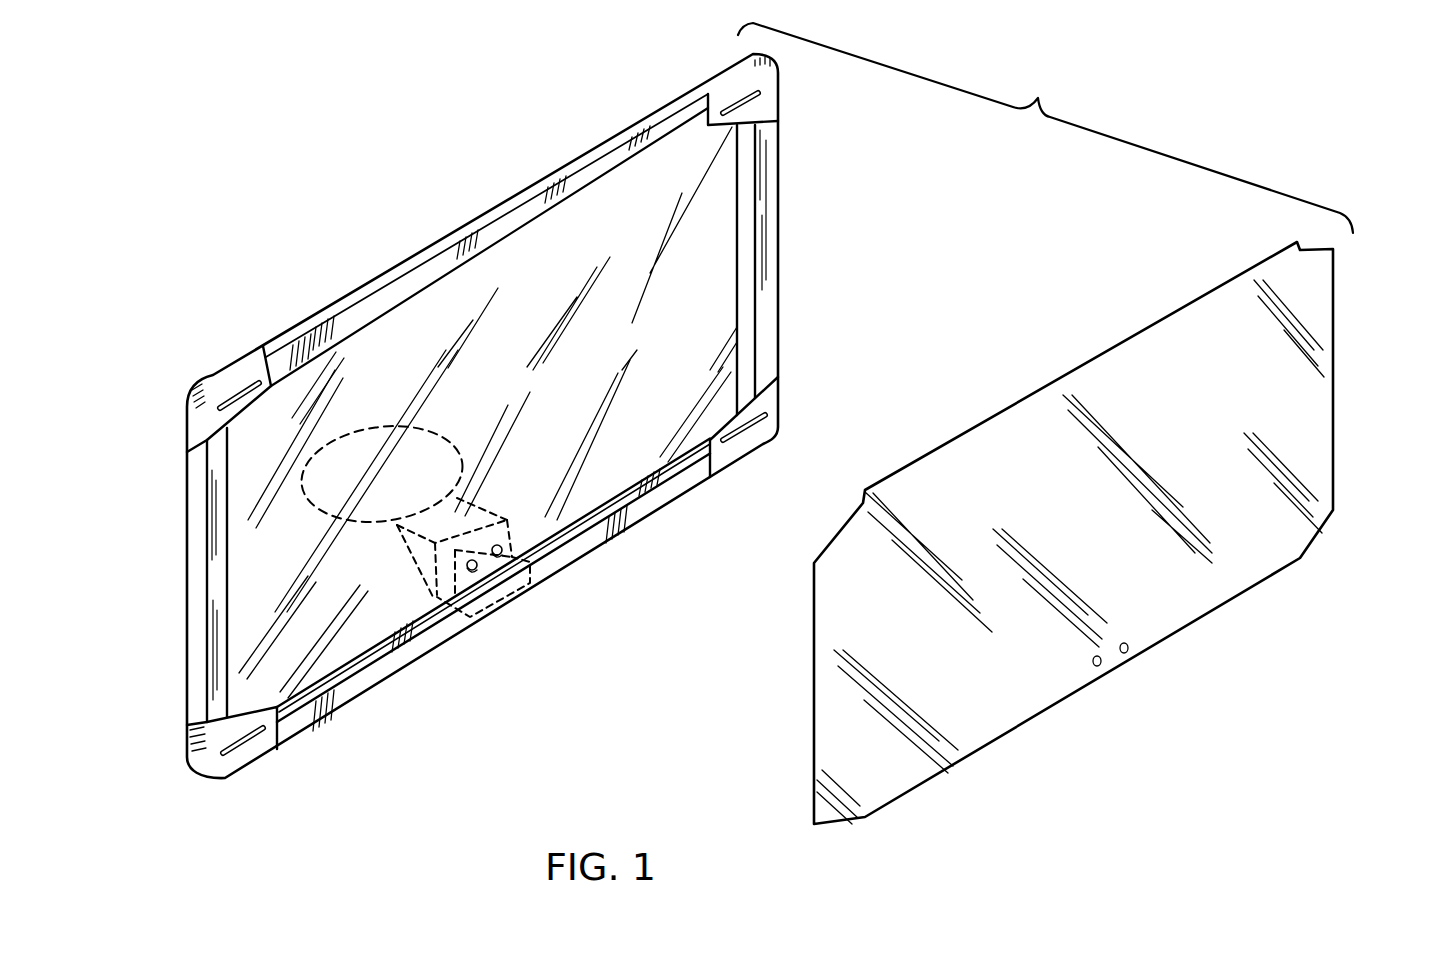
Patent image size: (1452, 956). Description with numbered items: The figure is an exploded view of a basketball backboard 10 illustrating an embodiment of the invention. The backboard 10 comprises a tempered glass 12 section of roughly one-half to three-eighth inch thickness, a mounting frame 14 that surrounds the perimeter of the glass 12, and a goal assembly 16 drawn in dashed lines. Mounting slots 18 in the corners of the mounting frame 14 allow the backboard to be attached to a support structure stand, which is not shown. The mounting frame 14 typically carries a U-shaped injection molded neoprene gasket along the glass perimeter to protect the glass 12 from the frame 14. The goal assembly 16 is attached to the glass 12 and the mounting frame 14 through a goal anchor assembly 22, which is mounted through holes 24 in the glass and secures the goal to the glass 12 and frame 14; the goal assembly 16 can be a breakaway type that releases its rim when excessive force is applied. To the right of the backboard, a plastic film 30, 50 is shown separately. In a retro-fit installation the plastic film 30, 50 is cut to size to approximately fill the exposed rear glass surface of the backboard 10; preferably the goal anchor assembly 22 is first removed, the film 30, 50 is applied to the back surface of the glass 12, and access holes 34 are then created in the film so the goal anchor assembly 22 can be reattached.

The backboard 10 is at (174, 608).
The glass 12 is at (417, 317).
The mounting frame 14 is at (288, 337).
The goal assembly 16 is at (457, 515).
The mounting slots 18 is at (757, 98).
The goal anchor assembly 22 is at (508, 520).
The holes 24 is at (503, 556).
The plastic film 30 is at (1128, 533).
The plastic film 50 is at (1128, 533).
The access holes 34 is at (1128, 652).